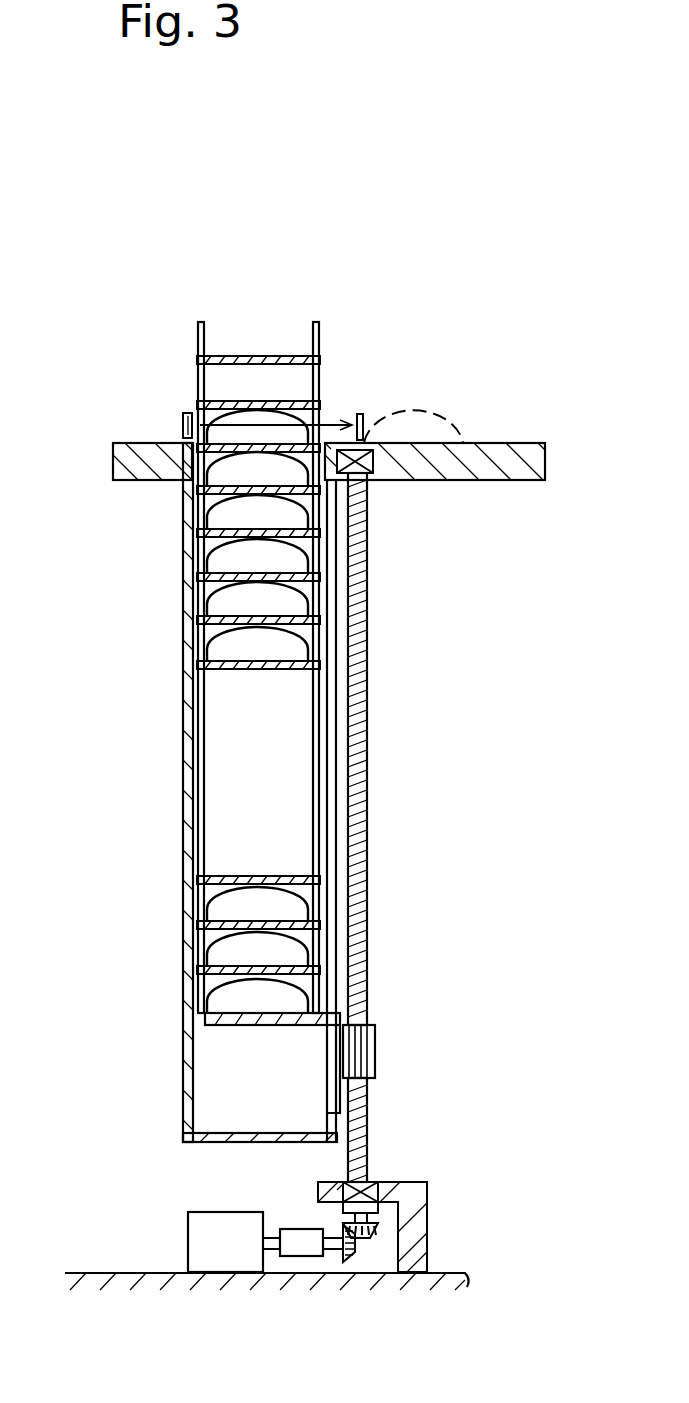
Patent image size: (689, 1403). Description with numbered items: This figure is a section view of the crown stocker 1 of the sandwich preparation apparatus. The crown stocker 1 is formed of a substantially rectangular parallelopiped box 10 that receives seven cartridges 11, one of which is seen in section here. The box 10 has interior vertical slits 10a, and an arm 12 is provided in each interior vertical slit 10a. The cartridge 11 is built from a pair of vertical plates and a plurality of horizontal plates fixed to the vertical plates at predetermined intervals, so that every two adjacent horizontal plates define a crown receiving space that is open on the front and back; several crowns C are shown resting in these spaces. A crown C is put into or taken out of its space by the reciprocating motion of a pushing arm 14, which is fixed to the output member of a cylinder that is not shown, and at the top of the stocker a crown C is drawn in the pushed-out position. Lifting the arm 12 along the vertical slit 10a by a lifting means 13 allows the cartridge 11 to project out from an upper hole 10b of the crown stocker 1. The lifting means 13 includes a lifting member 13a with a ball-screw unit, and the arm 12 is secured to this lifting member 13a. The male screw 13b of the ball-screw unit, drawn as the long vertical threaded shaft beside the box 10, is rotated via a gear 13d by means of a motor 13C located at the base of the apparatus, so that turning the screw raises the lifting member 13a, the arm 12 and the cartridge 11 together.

The crown stocker 1 is at (158, 643).
The box 10 is at (183, 1047).
The interior vertical slit 10a is at (330, 710).
The upper hole 10b is at (198, 462).
The cartridge 11 is at (318, 322).
The arm 12 is at (262, 1025).
The lifting means 13 is at (385, 995).
The lifting member 13a is at (378, 1055).
The male screw 13b is at (362, 912).
The motor 13C is at (202, 1237).
The gear 13d is at (368, 1237).
The pushing arm 14 is at (185, 413).
The crown C is at (243, 945).